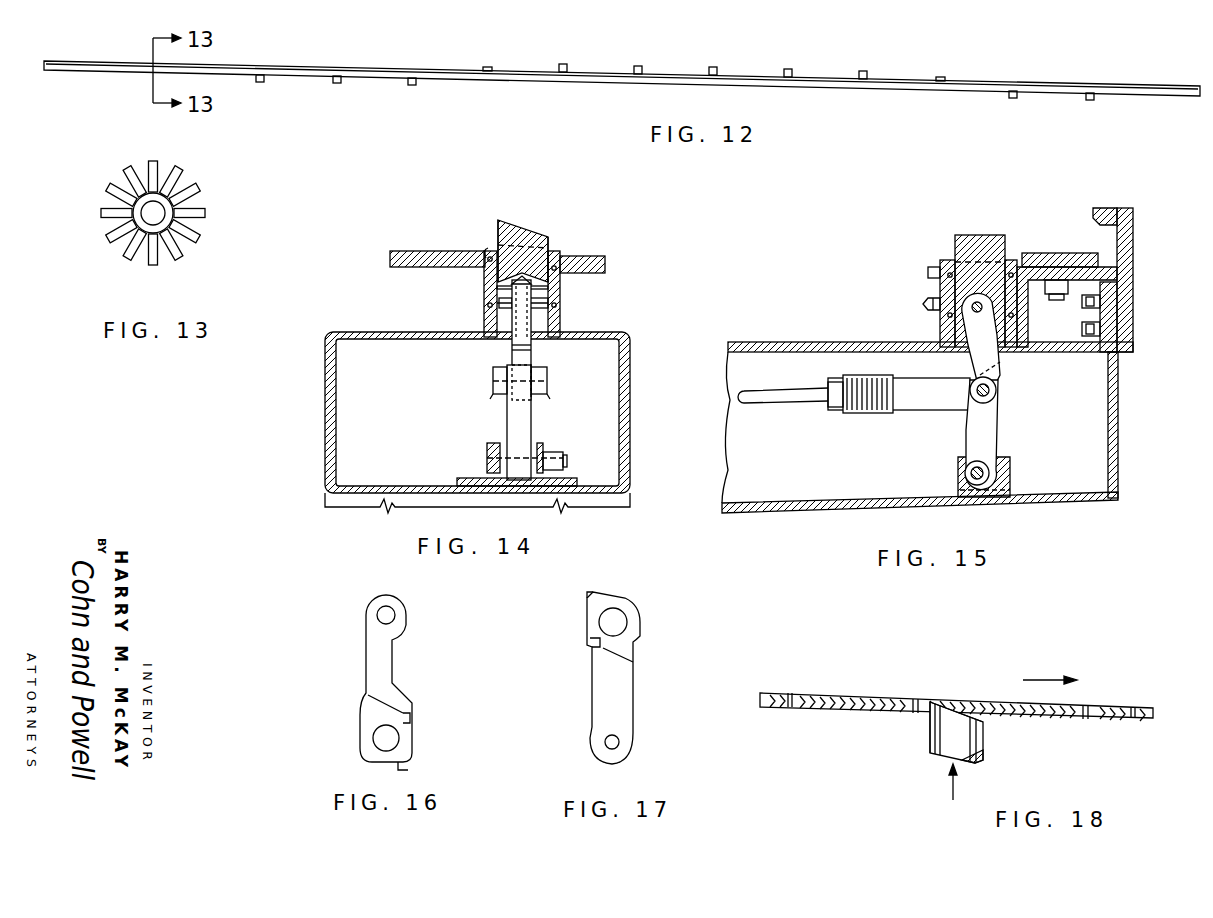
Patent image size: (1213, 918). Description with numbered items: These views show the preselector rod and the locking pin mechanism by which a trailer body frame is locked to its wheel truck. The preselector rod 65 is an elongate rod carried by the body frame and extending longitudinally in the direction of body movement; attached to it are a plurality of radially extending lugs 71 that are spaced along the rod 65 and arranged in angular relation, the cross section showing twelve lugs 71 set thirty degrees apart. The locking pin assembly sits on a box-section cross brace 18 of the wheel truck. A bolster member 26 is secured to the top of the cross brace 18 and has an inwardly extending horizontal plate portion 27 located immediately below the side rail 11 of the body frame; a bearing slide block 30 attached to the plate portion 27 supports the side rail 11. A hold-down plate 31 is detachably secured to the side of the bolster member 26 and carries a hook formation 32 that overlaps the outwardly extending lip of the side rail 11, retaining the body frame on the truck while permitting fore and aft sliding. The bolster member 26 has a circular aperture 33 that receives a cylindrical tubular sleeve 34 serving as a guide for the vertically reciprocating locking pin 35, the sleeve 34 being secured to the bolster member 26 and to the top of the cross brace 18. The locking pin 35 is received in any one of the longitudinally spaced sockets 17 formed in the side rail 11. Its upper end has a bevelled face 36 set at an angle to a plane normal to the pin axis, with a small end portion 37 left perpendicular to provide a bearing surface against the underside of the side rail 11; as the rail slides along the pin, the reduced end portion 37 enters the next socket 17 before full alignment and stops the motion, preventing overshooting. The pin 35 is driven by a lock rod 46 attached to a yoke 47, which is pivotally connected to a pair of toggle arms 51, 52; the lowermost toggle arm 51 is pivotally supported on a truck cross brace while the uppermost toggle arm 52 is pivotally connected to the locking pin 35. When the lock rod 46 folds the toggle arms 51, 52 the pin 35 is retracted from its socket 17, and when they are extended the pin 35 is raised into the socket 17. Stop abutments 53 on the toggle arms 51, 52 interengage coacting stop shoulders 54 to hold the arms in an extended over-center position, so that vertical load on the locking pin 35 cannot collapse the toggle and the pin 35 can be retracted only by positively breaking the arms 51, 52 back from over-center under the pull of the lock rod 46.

In FIG. 18, the side rail 11 is at (832, 693).
In FIG. 18, the locking pin socket 17 is at (790, 708).
In FIG. 14, the cross brace 18 is at (325, 418).
In FIG. 15, the cross brace 18 is at (798, 513).
In FIG. 15, the bolster member 26 is at (1118, 285).
In FIG. 14, the horizontal plate portion 27 is at (606, 265).
In FIG. 15, the horizontal plate portion 27 is at (1118, 271).
In FIG. 15, the bearing slide block 30 is at (1076, 255).
In FIG. 15, the hold-down plate 31 is at (1134, 330).
In FIG. 15, the hook formation 32 is at (1100, 208).
In FIG. 14, the circular aperture 33 is at (488, 256).
In FIG. 15, the circular aperture 33 is at (942, 268).
In FIG. 14, the tubular sleeve 34 is at (484, 316).
In FIG. 15, the tubular sleeve 34 is at (940, 287).
In FIG. 14, the locking pin 35 is at (549, 245).
In FIG. 15, the locking pin 35 is at (980, 235).
In FIG. 18, the locking pin 35 is at (984, 741).
In FIG. 14, the bevelled face 36 is at (533, 232).
In FIG. 18, the bevelled face 36 is at (968, 712).
In FIG. 14, the end portion 37 is at (500, 220).
In FIG. 18, the end portion 37 is at (934, 700).
In FIG. 15, the lock rod 46 is at (770, 404).
In FIG. 15, the yoke 47 is at (922, 410).
In FIG. 14, the toggle arm 51 is at (525, 425).
In FIG. 15, the toggle arm 51 is at (997, 432).
In FIG. 17, the toggle arm 51 is at (592, 681).
In FIG. 14, the toggle arm 52 is at (512, 352).
In FIG. 15, the toggle arm 52 is at (999, 361).
In FIG. 16, the toggle arm 52 is at (366, 645).
In FIG. 16, the stop abutment 53 is at (411, 724).
In FIG. 17, the stop abutment 53 is at (590, 641).
In FIG. 16, the stop shoulder 54 is at (408, 770).
In FIG. 17, the stop shoulder 54 is at (590, 592).
In FIG. 12, the preselector rod 65 is at (533, 81).
In FIG. 13, the preselector rod 65 is at (140, 218).
In FIG. 12, the lug 71 is at (339, 83).
In FIG. 13, the lug 71 is at (178, 171).